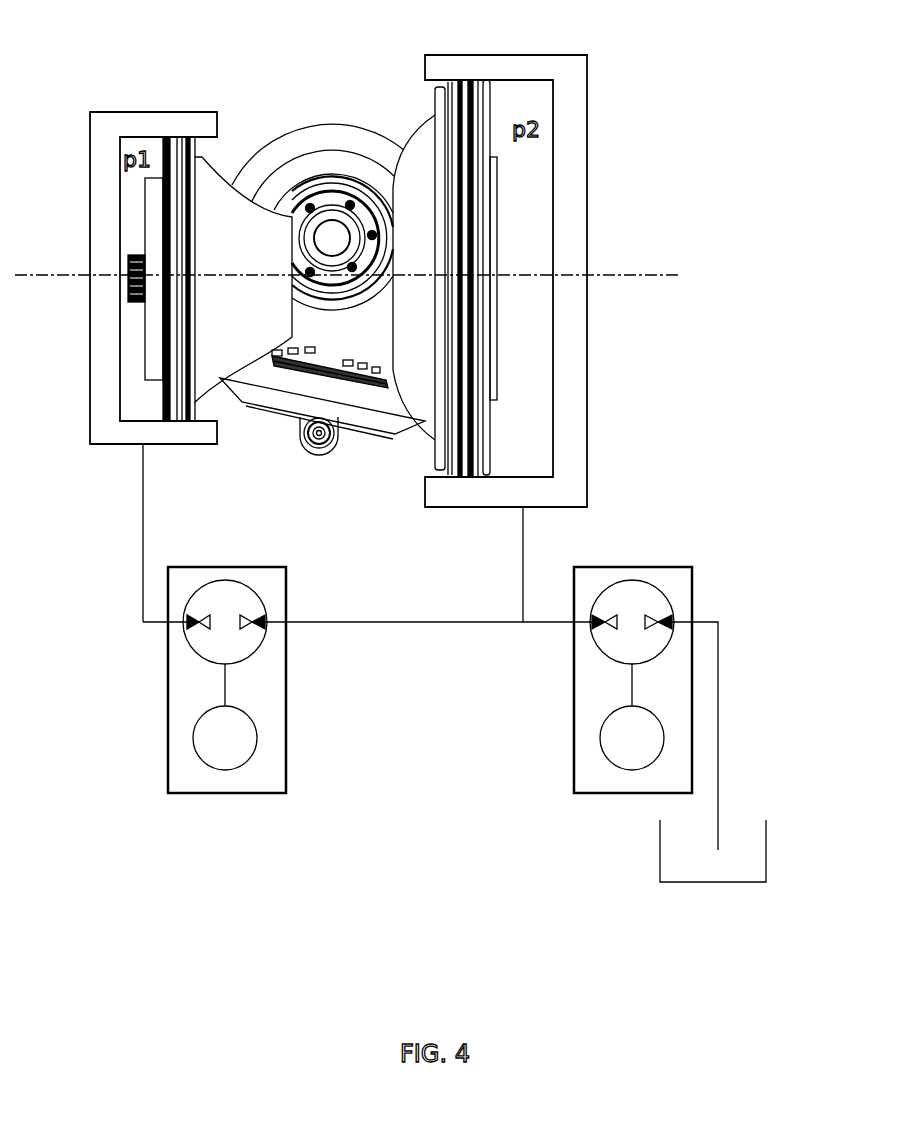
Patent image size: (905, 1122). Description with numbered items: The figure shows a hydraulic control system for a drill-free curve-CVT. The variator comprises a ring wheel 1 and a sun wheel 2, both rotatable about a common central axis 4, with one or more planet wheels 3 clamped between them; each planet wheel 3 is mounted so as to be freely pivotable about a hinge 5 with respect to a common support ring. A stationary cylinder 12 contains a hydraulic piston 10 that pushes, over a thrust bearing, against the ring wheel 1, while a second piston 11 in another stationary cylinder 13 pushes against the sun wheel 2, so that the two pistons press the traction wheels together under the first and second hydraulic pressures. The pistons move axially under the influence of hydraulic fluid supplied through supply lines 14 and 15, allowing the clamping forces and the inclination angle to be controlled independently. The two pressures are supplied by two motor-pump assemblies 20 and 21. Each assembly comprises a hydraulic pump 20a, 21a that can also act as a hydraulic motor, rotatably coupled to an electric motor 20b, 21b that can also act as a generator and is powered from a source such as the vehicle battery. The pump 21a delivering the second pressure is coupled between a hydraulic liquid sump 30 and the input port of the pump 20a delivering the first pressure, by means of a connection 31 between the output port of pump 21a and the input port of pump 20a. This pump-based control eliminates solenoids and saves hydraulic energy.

The ring wheel 1 is at (230, 266).
The sun wheel 2 is at (407, 246).
The planet wheel 3 is at (318, 132).
The common central axis 4 is at (607, 272).
The hinge 5 is at (321, 447).
The hydraulic piston 10 is at (185, 140).
The piston 11 is at (462, 98).
The stationary cylinder 12 is at (146, 122).
The stationary cylinder 13 is at (540, 65).
The supply line 14 is at (143, 518).
The supply line 15 is at (523, 567).
The motor-pump assembly 20 is at (270, 660).
The hydraulic pump 20a is at (248, 640).
The electric motor 20b is at (248, 742).
The motor-pump assembly 21 is at (584, 658).
The hydraulic pump 21a is at (615, 645).
The electric motor 21b is at (615, 742).
The hydraulic liquid sump 30 is at (745, 833).
The connection 31 is at (417, 622).